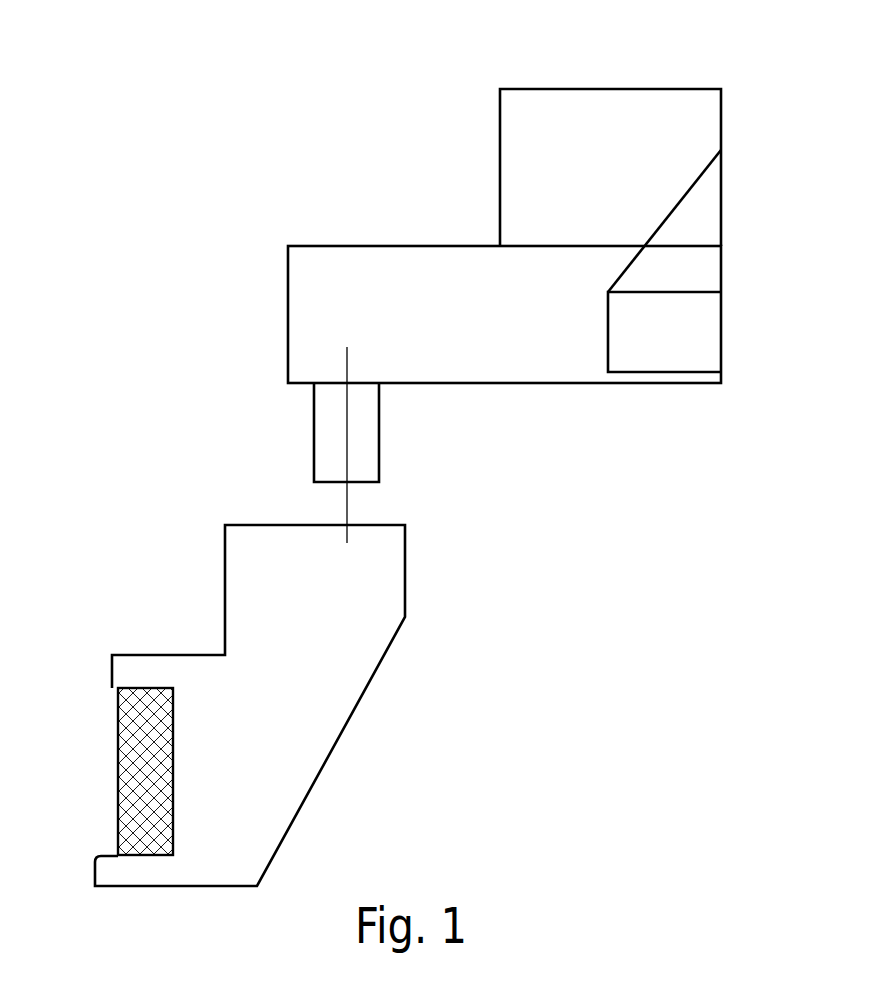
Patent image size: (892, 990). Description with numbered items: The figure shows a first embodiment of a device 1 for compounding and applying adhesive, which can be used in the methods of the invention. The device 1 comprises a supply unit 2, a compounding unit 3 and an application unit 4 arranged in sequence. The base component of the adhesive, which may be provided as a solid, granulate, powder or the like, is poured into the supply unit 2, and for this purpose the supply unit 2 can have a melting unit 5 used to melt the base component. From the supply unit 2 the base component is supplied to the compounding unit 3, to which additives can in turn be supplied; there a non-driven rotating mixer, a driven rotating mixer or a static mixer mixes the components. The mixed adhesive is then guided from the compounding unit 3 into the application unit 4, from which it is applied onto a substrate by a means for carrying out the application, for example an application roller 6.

The device for compounding and applying adhesive 1 is at (202, 334).
The supply unit 2 is at (573, 110).
The compounding unit 3 is at (379, 428).
The application unit 4 is at (337, 722).
The melting unit 5 is at (721, 327).
The application roller 6 is at (140, 763).